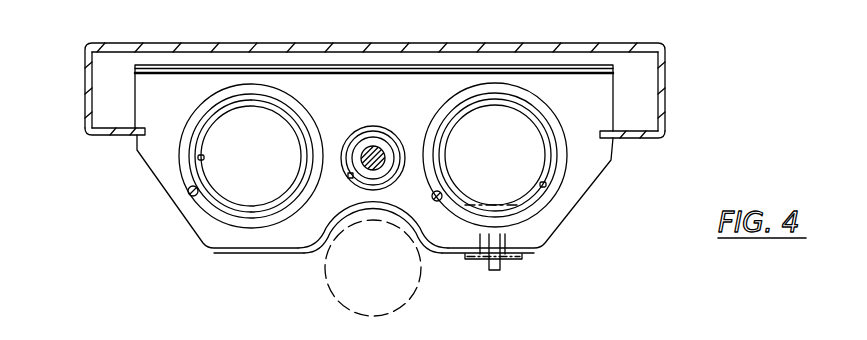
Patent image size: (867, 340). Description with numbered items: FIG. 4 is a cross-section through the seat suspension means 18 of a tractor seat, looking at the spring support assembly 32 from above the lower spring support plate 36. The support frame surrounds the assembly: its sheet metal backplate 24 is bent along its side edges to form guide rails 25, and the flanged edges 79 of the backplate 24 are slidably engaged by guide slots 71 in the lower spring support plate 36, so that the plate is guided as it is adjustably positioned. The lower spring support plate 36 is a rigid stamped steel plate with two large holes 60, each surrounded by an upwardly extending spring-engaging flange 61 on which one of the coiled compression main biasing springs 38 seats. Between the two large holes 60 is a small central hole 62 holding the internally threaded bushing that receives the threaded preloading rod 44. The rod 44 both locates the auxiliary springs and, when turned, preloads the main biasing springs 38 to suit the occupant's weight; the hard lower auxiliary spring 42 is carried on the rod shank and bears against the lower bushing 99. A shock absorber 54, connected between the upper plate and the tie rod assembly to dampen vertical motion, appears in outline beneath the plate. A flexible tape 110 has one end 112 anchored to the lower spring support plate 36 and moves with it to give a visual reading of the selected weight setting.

The backplate 24 is at (463, 43).
The guide rails 25 is at (90, 80).
The flanged edges 79 is at (125, 134).
The guide slots 71 is at (138, 139).
The seat suspension means 18 is at (141, 196).
The spring support assembly 32 is at (166, 231).
The lower spring support plate 36 is at (386, 104).
The main biasing springs 38 is at (241, 230).
The spring-engaging flange 61 is at (218, 213).
The large holes 60 is at (198, 159).
The lower bushing 99 is at (354, 150).
The small central hole 62 is at (382, 146).
The preloading rod 44 is at (377, 168).
The lower auxiliary spring 42 is at (386, 174).
The shock absorber 54 is at (319, 289).
The tape end 112 is at (472, 260).
The flexible tape 110 is at (516, 260).